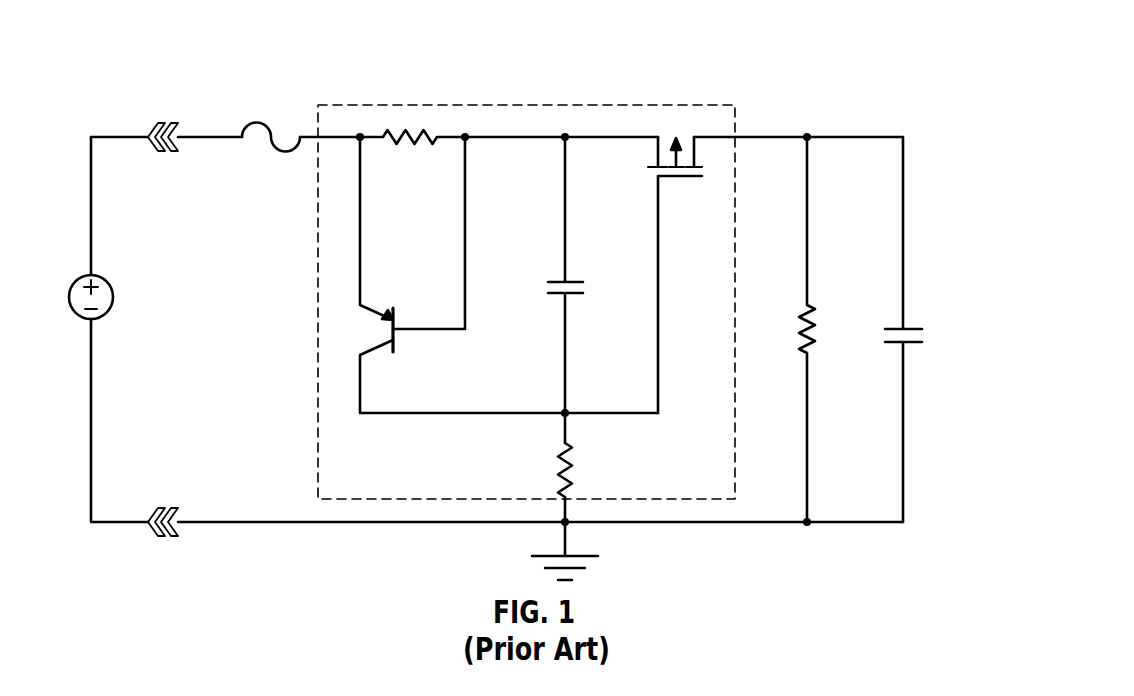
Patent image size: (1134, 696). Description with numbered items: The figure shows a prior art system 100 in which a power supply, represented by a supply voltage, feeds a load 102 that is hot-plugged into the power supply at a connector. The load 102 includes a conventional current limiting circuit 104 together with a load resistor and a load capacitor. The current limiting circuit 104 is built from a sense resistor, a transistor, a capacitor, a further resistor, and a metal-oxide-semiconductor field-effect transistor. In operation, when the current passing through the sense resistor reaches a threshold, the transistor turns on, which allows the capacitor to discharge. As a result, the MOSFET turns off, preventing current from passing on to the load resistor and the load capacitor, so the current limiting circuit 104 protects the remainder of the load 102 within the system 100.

The prior art system 100 is at (527, 294).
The load 102 is at (643, 309).
The current limiting circuit 104 is at (663, 105).